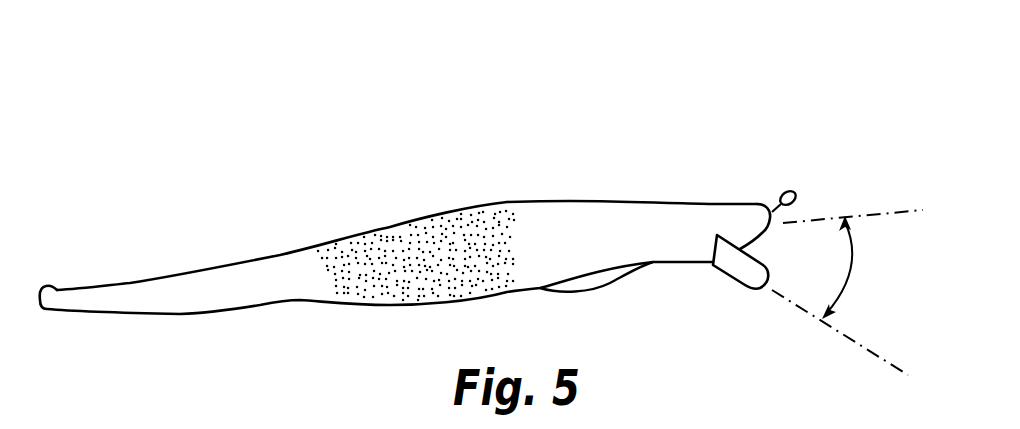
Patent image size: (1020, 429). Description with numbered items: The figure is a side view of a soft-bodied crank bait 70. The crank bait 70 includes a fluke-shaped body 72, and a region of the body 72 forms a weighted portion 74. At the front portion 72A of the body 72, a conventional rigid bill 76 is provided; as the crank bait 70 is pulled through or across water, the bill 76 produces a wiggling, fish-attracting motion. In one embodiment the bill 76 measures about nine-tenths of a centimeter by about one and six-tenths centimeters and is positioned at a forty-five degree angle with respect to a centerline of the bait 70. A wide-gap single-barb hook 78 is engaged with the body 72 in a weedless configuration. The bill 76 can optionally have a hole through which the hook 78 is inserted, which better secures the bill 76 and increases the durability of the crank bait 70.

The soft-bodied crank bait 70 is at (784, 182).
The fluke-shaped body 72 is at (207, 318).
The front portion of the body 72A is at (713, 201).
The weighted portion 74 is at (527, 170).
The rigid bill 76 is at (741, 281).
The wide-gap single-barb hook 78 is at (593, 293).